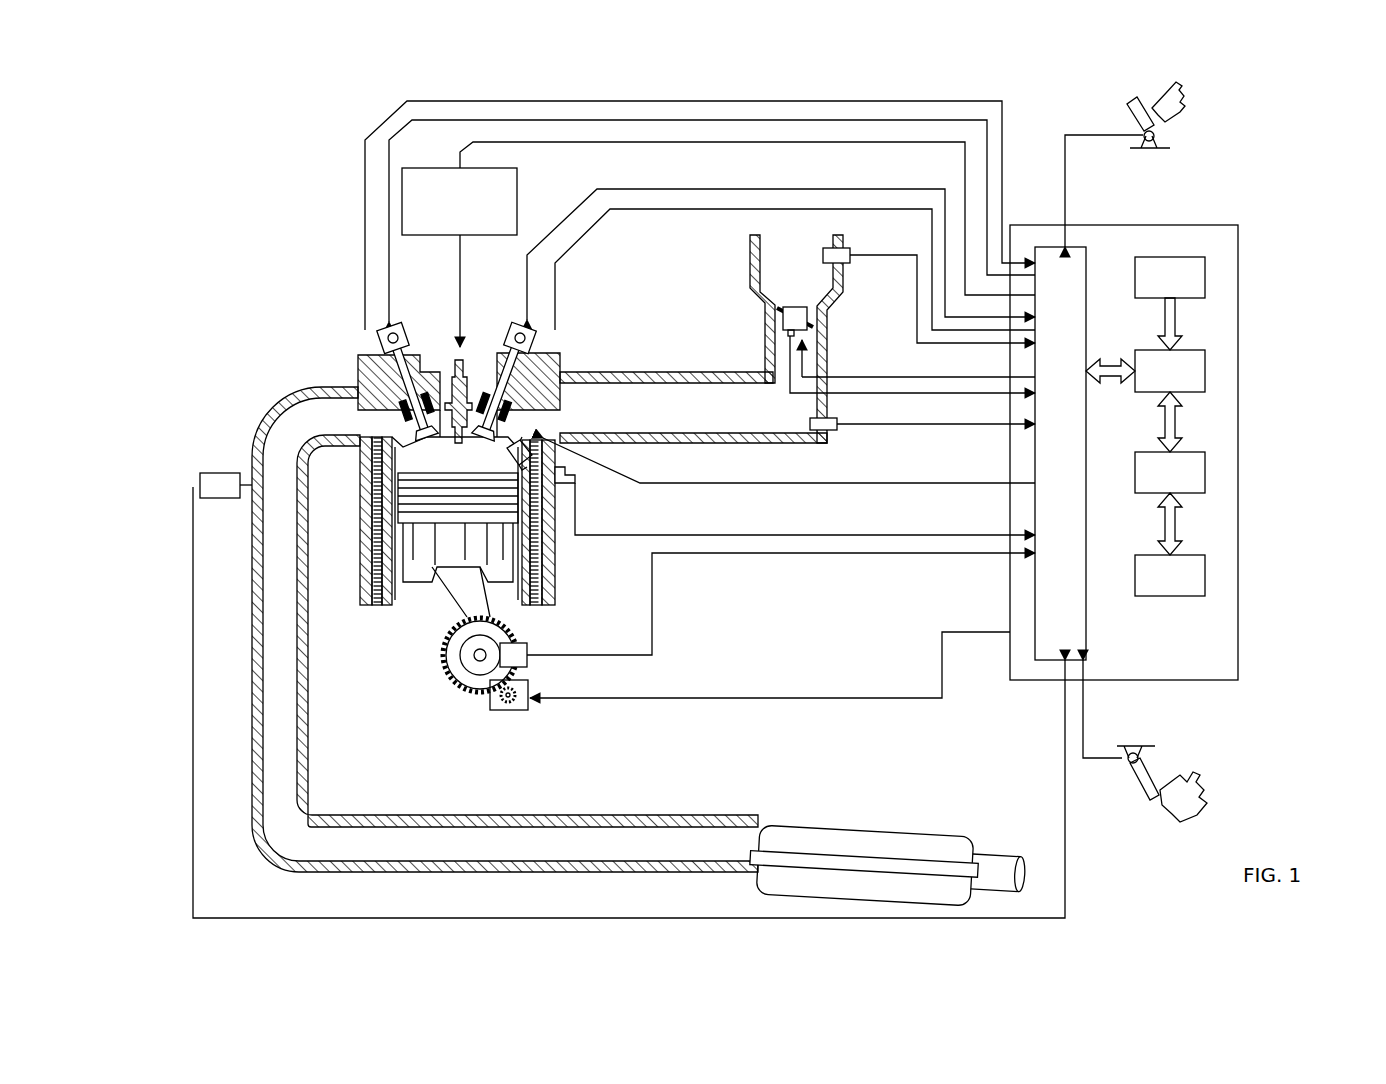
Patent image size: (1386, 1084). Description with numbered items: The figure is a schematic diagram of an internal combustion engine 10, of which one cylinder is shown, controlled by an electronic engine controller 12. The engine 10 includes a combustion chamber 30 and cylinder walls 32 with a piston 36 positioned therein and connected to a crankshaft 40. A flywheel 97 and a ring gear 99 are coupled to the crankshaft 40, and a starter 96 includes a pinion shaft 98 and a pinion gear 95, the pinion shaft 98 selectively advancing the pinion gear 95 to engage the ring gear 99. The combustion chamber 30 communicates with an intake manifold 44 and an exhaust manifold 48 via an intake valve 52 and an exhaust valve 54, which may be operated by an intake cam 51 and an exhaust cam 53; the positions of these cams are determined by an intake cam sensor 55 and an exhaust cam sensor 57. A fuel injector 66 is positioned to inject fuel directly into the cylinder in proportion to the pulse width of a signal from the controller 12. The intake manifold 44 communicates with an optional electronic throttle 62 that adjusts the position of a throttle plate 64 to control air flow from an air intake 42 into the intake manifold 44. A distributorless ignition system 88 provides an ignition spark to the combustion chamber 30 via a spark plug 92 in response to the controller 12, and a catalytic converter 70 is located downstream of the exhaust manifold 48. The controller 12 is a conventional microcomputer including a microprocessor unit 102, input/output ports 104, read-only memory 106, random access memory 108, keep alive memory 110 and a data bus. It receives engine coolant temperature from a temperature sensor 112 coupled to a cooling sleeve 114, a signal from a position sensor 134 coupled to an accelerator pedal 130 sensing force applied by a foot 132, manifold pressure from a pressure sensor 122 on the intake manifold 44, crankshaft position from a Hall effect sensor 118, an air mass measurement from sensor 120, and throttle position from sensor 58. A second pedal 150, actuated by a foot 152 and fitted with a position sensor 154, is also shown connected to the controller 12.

The internal combustion engine 10 is at (295, 305).
The electronic engine controller 12 is at (1238, 228).
The combustion chamber 30 is at (457, 452).
The cylinder walls 32 is at (405, 597).
The piston 36 is at (442, 582).
The crankshaft 40 is at (462, 675).
The air intake 42 is at (808, 340).
The intake manifold 44 is at (693, 407).
The exhaust manifold 48 is at (505, 629).
The intake cam 51 is at (518, 322).
The intake valve 52 is at (512, 417).
The exhaust cam 53 is at (395, 322).
The exhaust valve 54 is at (400, 410).
The intake cam sensor 55 is at (535, 328).
The exhaust cam sensor 57 is at (378, 333).
The throttle position sensor 58 is at (789, 338).
The electronic throttle 62 is at (813, 316).
The throttle plate 64 is at (777, 312).
The fuel injector 66 is at (568, 455).
The catalytic converter 70 is at (887, 846).
The distributorless ignition system 88 is at (415, 168).
The spark plug 92 is at (462, 362).
The pinion gear 95 is at (518, 712).
The starter 96 is at (506, 718).
The flywheel 97 is at (457, 652).
The pinion shaft 98 is at (507, 708).
The ring gear 99 is at (477, 693).
The microprocessor unit 102 is at (1205, 372).
The input/output ports 104 is at (1086, 255).
The read-only memory 106 is at (1205, 275).
The random access memory 108 is at (1205, 475).
The keep alive memory 110 is at (1205, 578).
The temperature sensor 112 is at (565, 484).
The cooling sleeve 114 is at (540, 553).
The Hall effect sensor 118 is at (527, 640).
The air mass sensor 120 is at (845, 248).
The pressure sensor 122 is at (835, 431).
The accelerator pedal 130 is at (1188, 114).
The foot 132 is at (1178, 98).
The position sensor 134 is at (1170, 147).
The brake pedal 150 is at (1146, 772).
The foot 152 is at (1192, 773).
The brake pedal position sensor 154 is at (1123, 752).